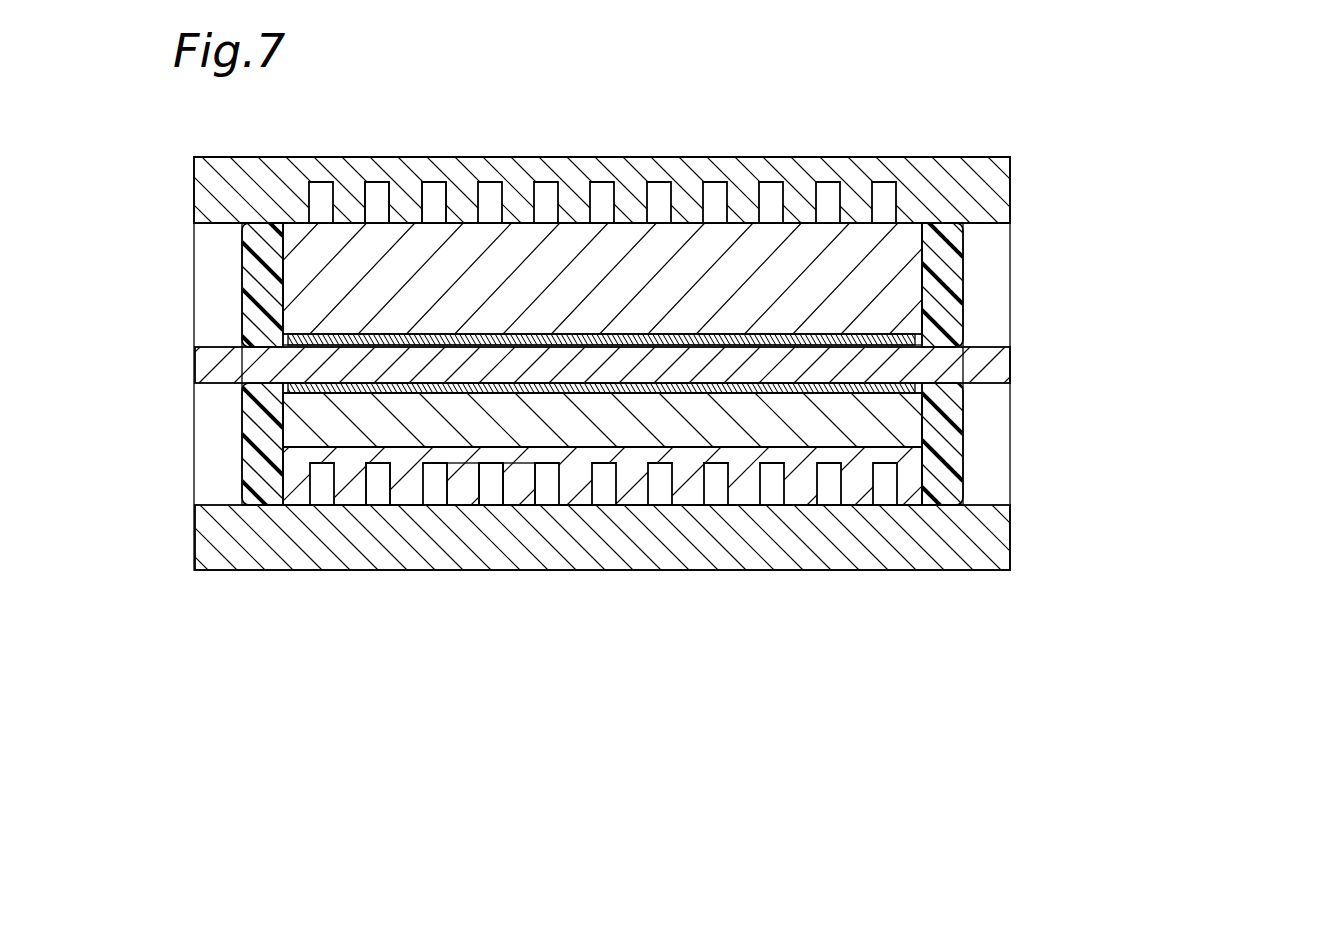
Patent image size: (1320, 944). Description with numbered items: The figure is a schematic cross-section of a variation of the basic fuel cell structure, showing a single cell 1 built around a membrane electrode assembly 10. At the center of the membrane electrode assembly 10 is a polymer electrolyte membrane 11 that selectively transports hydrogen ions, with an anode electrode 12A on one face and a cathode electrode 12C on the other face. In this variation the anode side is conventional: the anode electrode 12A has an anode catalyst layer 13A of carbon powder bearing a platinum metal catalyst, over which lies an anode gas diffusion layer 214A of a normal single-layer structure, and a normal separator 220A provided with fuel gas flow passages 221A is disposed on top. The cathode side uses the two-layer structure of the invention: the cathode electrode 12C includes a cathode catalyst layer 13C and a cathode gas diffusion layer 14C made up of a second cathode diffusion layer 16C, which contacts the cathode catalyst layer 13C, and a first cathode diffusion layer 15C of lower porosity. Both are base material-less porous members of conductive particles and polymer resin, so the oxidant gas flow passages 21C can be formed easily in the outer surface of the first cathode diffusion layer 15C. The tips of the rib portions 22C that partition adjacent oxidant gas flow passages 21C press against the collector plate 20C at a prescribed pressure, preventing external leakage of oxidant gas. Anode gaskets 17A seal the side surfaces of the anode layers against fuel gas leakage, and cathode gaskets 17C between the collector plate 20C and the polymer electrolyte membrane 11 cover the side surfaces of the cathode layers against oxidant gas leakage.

The cell 1 is at (1243, 165).
The membrane electrode assembly 10 is at (1185, 283).
The polymer electrolyte membrane 11 is at (1000, 360).
The anode electrode 12A is at (1112, 272).
The cathode electrode 12C is at (1112, 380).
The anode catalyst layer 13A is at (922, 336).
The cathode catalyst layer 13C is at (922, 387).
The cathode gas diffusion layer 14C is at (1037, 410).
The first cathode diffusion layer 15C is at (907, 455).
The second cathode diffusion layer 16C is at (910, 415).
The anode gasket 17A is at (257, 260).
The cathode gasket 17C is at (257, 445).
The collector plate 20C is at (1000, 523).
The oxidant gas flow passage 21C is at (378, 495).
The rib portion 22C is at (468, 487).
The anode gas diffusion layer 214A is at (898, 284).
The separator 220A is at (1000, 182).
The fuel gas flow passage 221A is at (378, 183).